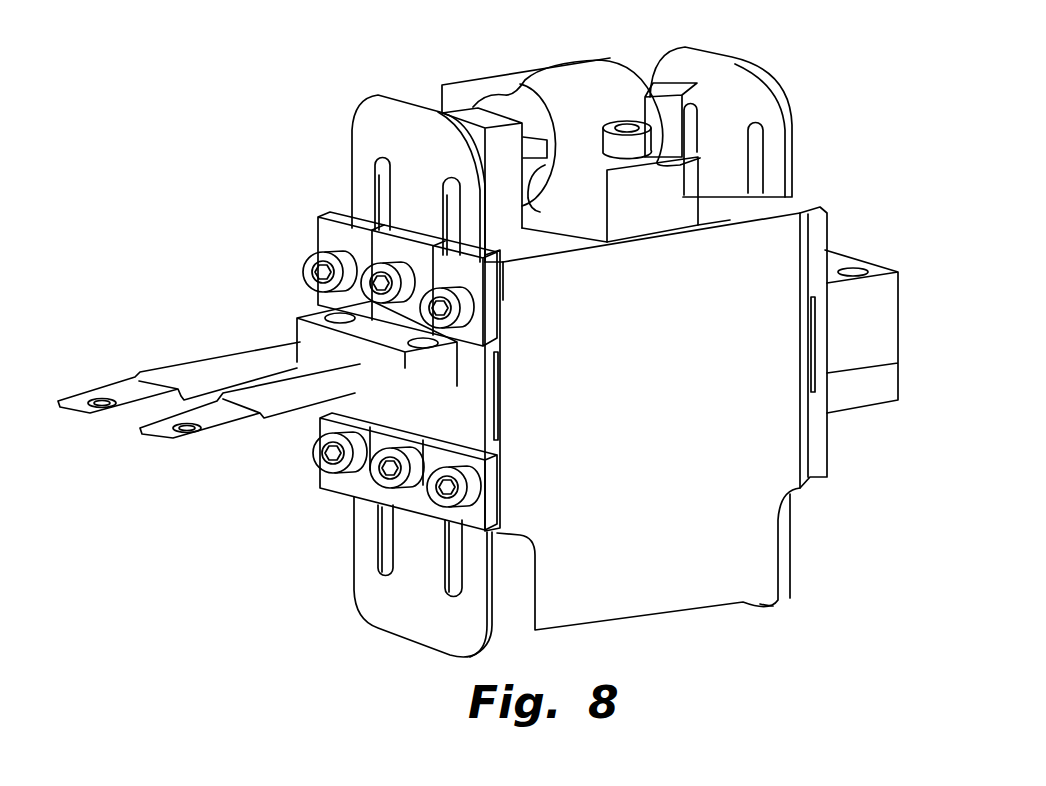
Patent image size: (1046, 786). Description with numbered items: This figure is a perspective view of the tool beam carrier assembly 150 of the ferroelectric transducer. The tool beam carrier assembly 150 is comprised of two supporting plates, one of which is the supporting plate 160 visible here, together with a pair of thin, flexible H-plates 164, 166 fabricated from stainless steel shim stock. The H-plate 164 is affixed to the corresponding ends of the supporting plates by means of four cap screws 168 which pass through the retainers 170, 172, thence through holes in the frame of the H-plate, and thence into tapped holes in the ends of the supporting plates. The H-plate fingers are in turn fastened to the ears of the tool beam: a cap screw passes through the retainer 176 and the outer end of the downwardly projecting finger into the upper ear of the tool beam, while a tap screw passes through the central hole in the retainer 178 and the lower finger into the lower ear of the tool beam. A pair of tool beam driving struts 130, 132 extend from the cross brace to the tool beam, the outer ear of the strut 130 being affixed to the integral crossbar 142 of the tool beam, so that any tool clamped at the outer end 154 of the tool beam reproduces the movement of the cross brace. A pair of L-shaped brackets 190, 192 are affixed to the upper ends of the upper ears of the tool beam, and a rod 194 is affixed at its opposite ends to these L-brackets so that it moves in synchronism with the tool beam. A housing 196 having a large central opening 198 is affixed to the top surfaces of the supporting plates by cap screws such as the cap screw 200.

The tool beam driving strut 130 is at (210, 436).
The tool beam driving strut 132 is at (103, 413).
The integral crossbar 142 is at (303, 344).
The tool beam carrier assembly 150 is at (690, 640).
The outer end of tool beam 154 is at (836, 258).
The supporting plate 160 is at (690, 416).
The H-plate 164 is at (358, 113).
The H-plate 166 is at (752, 86).
The cap screw 168 is at (312, 278).
The retainer 170 is at (472, 372).
The retainer 172 is at (323, 228).
The retainer 176 is at (397, 248).
The retainer 178 is at (413, 500).
The L-shaped bracket 190 is at (473, 115).
The L-shaped bracket 192 is at (655, 90).
The rod 194 is at (527, 140).
The housing 196 is at (577, 78).
The central opening 198 is at (540, 200).
The cap screw 200 is at (627, 155).